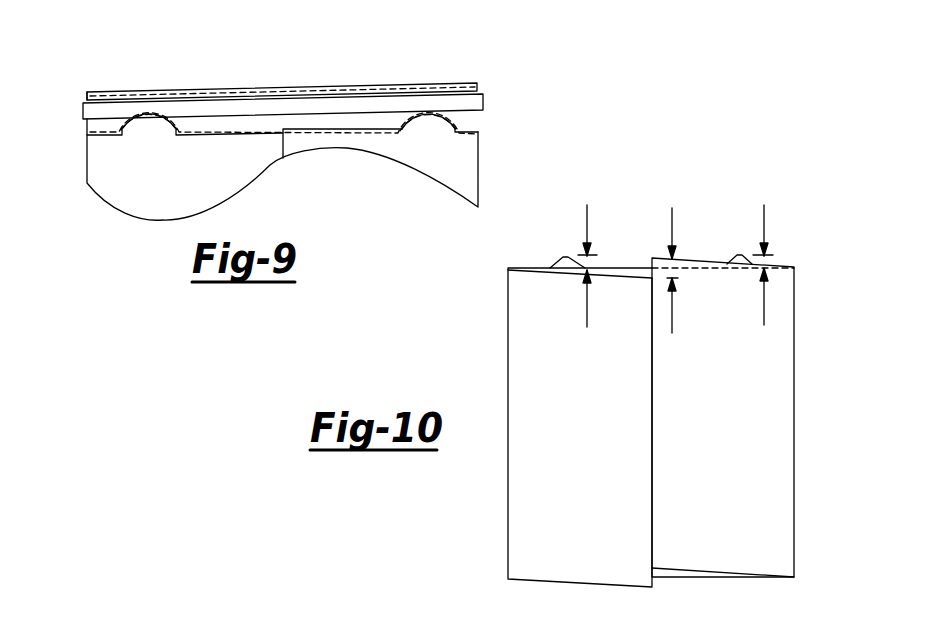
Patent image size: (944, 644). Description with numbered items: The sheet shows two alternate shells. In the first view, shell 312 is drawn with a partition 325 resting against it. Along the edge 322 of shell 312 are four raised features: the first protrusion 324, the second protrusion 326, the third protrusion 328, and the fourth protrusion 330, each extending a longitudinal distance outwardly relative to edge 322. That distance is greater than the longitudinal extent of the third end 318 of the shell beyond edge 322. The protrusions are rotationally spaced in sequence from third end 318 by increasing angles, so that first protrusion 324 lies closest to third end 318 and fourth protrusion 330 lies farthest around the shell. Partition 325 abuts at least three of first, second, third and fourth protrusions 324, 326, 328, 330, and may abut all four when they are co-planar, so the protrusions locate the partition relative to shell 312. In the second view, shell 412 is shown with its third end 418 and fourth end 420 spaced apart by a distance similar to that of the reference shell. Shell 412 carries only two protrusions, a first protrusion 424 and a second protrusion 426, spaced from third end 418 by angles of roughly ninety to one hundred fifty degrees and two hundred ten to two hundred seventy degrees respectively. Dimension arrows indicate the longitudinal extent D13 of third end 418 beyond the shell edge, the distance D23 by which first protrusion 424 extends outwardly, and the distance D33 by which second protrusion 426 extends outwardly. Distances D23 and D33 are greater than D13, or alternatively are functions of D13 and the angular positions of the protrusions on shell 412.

In FIG. 9, the shell 312 is at (78, 141).
In FIG. 9, the third end 318 is at (277, 144).
In FIG. 9, the edge 322 is at (314, 128).
In FIG. 9, the first protrusion 324 is at (404, 112).
In FIG. 9, the partition 325 is at (483, 87).
In FIG. 9, the second protrusion 326 is at (438, 121).
In FIG. 9, the third protrusion 328 is at (173, 120).
In FIG. 9, the fourth protrusion 330 is at (170, 127).
In FIG. 10, the shell 412 is at (812, 259).
In FIG. 10, the third end 418 is at (652, 497).
In FIG. 10, the fourth end 420 is at (652, 428).
In FIG. 10, the first protrusion 424 is at (738, 258).
In FIG. 10, the second protrusion 426 is at (563, 257).
In FIG. 10, the longitudinal extent D13 is at (680, 276).
In FIG. 10, the longitudinal distance D23 is at (760, 257).
In FIG. 10, the longitudinal distance D33 is at (585, 265).